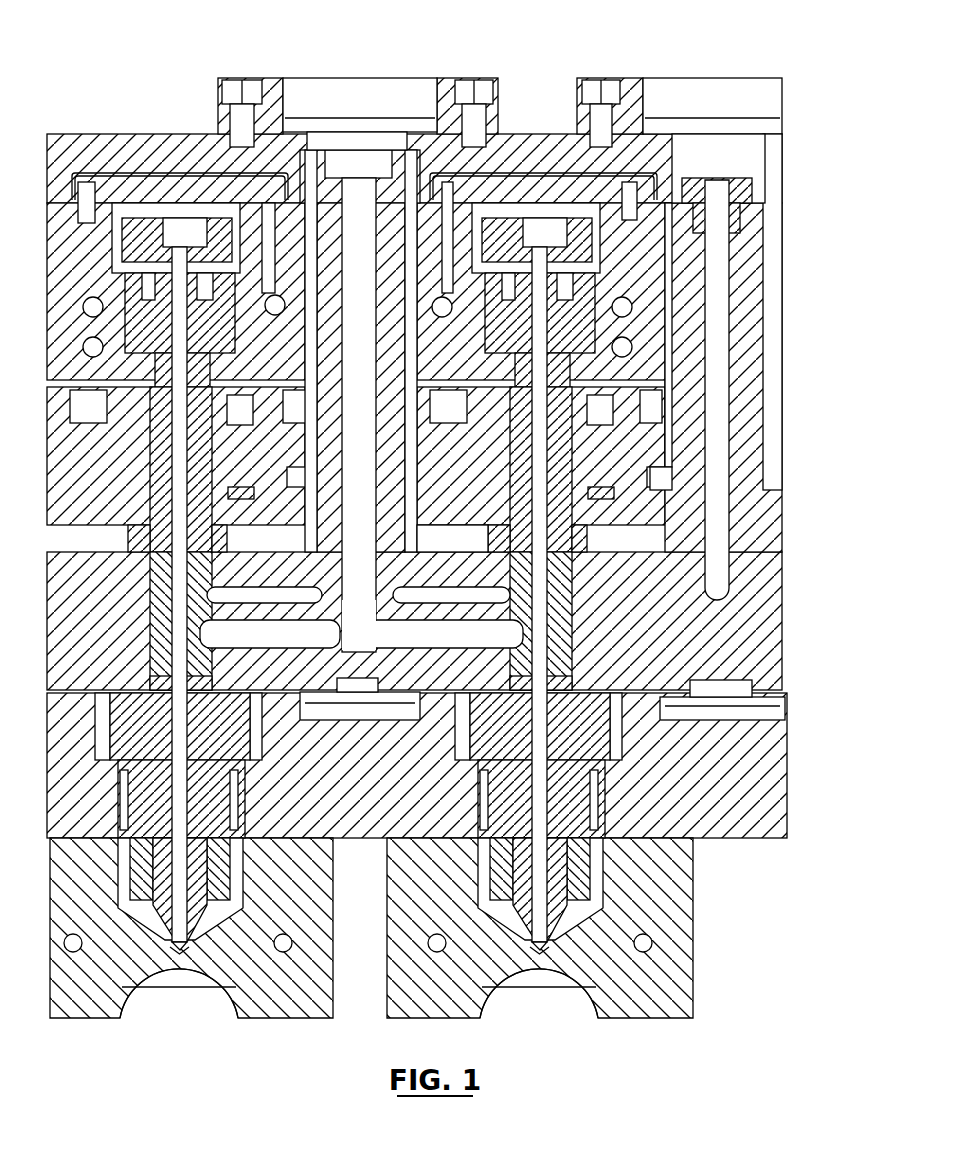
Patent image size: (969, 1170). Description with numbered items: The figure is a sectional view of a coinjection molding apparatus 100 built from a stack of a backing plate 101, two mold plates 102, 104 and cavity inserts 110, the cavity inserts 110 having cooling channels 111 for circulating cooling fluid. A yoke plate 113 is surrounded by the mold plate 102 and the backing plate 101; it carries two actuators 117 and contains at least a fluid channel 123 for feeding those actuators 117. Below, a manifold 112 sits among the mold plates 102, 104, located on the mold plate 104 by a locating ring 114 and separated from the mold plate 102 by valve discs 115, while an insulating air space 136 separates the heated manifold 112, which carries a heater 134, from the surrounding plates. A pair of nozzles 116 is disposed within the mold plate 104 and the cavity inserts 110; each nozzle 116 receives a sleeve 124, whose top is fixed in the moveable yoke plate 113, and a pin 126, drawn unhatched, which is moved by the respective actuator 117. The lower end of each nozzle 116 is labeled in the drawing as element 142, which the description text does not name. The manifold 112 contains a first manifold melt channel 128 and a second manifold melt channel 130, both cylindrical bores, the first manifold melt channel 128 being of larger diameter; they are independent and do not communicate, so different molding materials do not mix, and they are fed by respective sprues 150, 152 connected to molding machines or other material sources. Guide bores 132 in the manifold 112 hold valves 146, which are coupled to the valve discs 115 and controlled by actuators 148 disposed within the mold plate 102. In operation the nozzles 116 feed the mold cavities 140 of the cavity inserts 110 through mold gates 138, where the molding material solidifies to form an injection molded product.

The coinjection molding apparatus 100 is at (418, 533).
The backing plate 101 is at (78, 163).
The mold plate 102 is at (59, 483).
The mold plate 104 is at (56, 803).
The cavity inserts 110 is at (276, 910).
The cooling channels 111 is at (82, 952).
The manifold 112 is at (61, 643).
The yoke plate 113 is at (258, 363).
The locating ring 114 is at (366, 722).
The valve discs 115 is at (215, 535).
The nozzles 116 is at (245, 809).
The actuators 117 is at (105, 283).
The fluid channel 123 is at (228, 258).
The sleeve 124 is at (178, 768).
The pin 126 is at (237, 780).
The first manifold melt channel 128 is at (238, 637).
The second manifold melt channel 130 is at (278, 592).
The guide bores 132 is at (160, 678).
The heater 134 is at (128, 545).
The insulating air space 136 is at (436, 553).
The mold gates 138 is at (180, 953).
The mold cavities 140 is at (161, 1013).
The nozzle tip 142 is at (123, 823).
The valves 146 is at (143, 598).
The actuators 148 is at (238, 494).
The sprue 150 is at (387, 72).
The sprue 152 is at (705, 72).